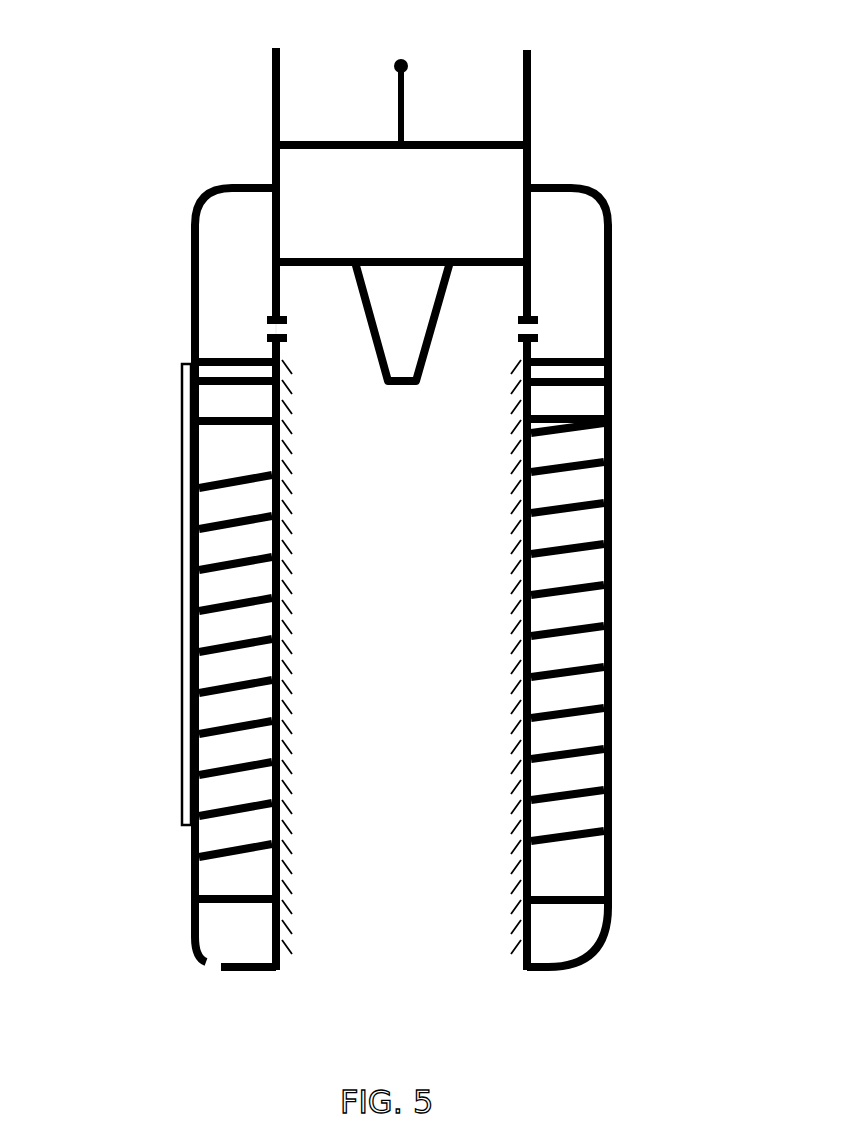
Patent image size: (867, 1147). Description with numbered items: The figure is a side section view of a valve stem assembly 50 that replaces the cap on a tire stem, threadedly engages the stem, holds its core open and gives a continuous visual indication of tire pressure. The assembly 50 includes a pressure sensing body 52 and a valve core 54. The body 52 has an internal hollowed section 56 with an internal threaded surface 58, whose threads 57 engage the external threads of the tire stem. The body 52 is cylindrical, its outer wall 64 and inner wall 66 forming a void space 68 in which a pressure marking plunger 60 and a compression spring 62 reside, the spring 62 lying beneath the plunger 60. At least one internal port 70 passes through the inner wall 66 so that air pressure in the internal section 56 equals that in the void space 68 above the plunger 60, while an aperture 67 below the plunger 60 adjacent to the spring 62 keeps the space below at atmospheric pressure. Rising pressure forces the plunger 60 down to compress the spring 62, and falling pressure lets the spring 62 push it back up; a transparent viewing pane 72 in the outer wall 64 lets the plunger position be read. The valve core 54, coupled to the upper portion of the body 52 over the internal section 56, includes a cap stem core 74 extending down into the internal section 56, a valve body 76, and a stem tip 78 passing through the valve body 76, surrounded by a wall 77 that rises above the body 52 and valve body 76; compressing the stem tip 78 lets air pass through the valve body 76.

The valve stem assembly 50 is at (145, 44).
The pressure sensing body 52 is at (409, 559).
The valve core 54 is at (410, 489).
The internal hollowed section 56 is at (402, 920).
The threads 57 is at (283, 713).
The internal threaded surface 58 is at (283, 642).
The pressure marking plunger 60 is at (212, 378).
The compression spring 62 is at (578, 623).
The outer wall 64 is at (190, 300).
The inner wall 66 is at (505, 955).
The aperture 67 is at (212, 962).
The void space 68 is at (222, 222).
The internal port 70 is at (283, 329).
The viewing pane 72 is at (178, 509).
The cap stem core 74 is at (402, 321).
The valve body 76 is at (401, 203).
The wall 77 is at (271, 91).
The stem tip 78 is at (410, 63).